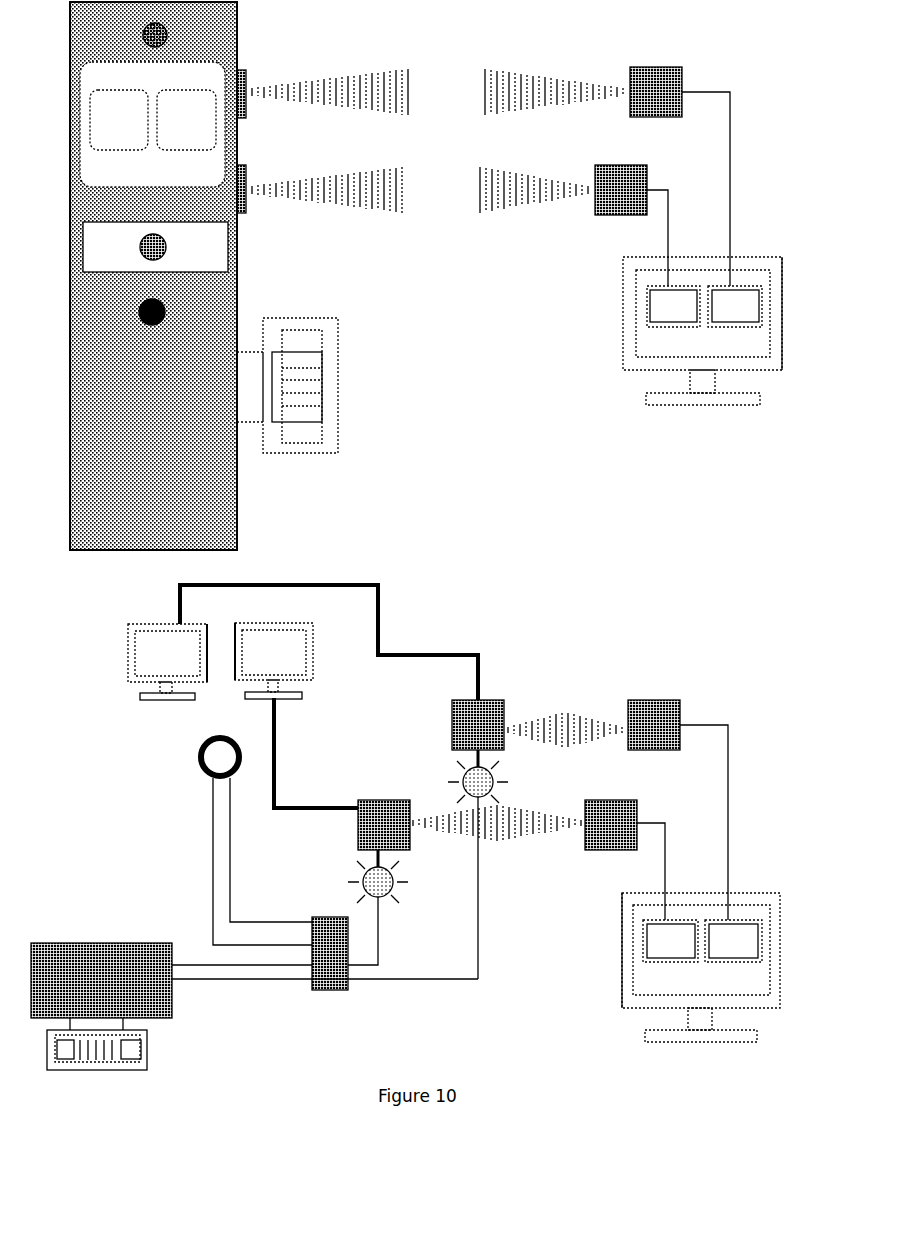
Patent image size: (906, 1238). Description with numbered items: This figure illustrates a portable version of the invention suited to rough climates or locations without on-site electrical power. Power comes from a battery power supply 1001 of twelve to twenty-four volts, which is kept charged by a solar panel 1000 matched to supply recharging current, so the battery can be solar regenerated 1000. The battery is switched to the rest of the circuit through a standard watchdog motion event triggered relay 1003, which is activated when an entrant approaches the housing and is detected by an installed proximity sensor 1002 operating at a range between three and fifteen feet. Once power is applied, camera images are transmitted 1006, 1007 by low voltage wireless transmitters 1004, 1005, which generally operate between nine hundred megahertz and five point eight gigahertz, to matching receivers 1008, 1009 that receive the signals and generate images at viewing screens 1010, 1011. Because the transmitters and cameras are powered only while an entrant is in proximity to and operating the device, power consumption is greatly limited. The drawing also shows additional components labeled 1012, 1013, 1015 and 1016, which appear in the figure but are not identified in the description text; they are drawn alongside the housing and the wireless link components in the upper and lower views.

The solar panel 1000 is at (192, 680).
The battery power supply 1001 is at (101, 966).
The proximity sensor 1002 is at (221, 622).
The watchdog motion event triggered relay 1003 is at (330, 965).
The low voltage wireless transmitter 1004 is at (364, 808).
The low voltage wireless transmitter 1005 is at (370, 401).
The transmitted camera images 1006 is at (430, 408).
The transmitted camera images 1007 is at (420, 519).
The matching receiver 1008 is at (679, 493).
The matching receiver 1009 is at (626, 542).
The viewing screen 1010 is at (671, 624).
The viewing screen 1011 is at (733, 624).
The second display 1012 is at (235, 394).
The first display 1013 is at (148, 395).
The first indicator light 1015 is at (324, 501).
The second indicator light 1016 is at (276, 599).